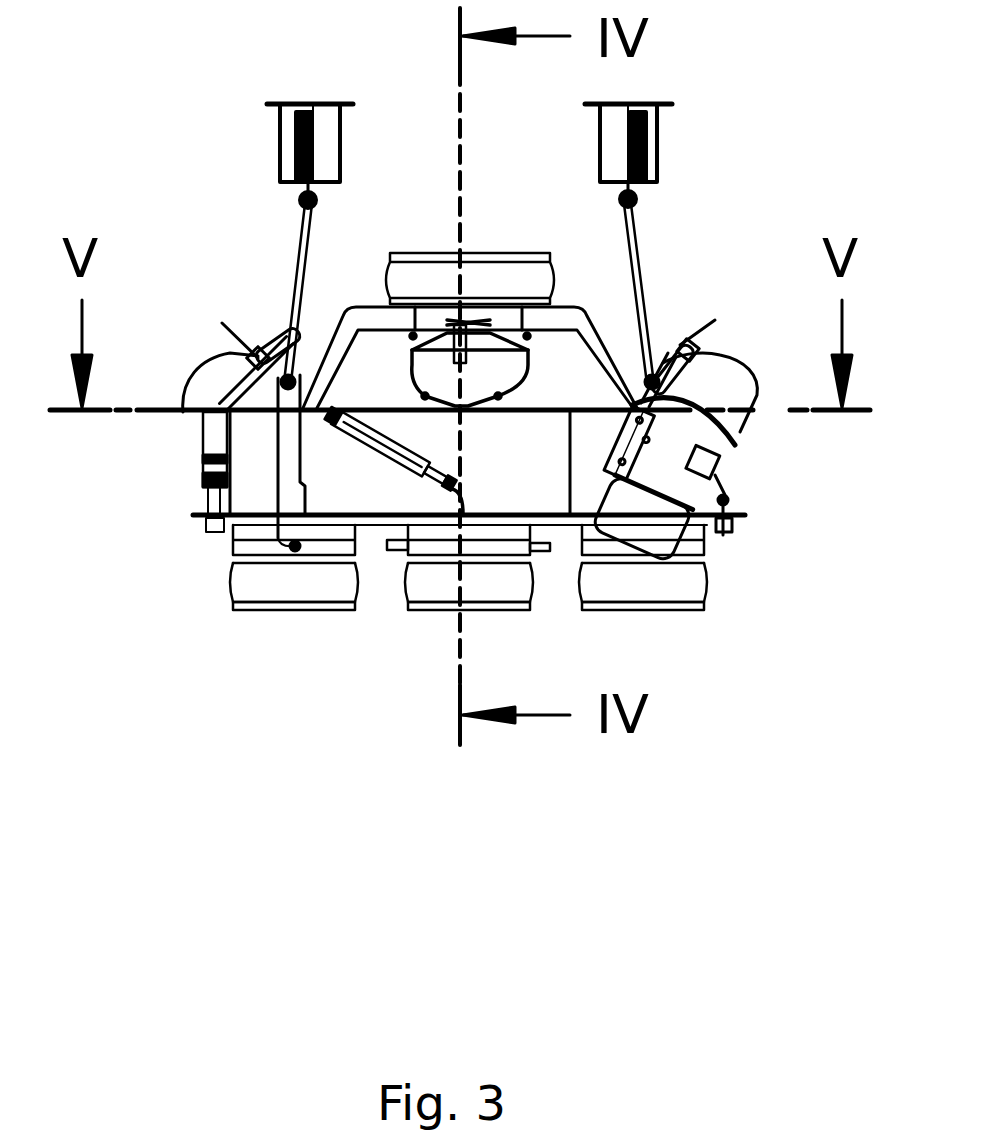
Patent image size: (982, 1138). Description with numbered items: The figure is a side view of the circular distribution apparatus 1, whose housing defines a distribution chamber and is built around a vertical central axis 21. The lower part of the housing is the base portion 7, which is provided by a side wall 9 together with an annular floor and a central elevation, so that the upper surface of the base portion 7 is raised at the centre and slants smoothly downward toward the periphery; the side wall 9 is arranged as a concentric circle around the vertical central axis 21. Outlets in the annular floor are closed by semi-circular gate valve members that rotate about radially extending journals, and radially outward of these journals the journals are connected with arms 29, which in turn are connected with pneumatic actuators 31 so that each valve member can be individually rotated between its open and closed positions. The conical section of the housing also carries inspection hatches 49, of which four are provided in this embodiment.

The circular distribution apparatus 1 is at (762, 148).
The base portion 7 is at (320, 493).
The side wall 9 is at (358, 493).
The vertical central axis 21 is at (461, 132).
The arm 29 is at (470, 500).
The pneumatic actuator 31 is at (440, 457).
The inspection hatch 49 is at (498, 378).